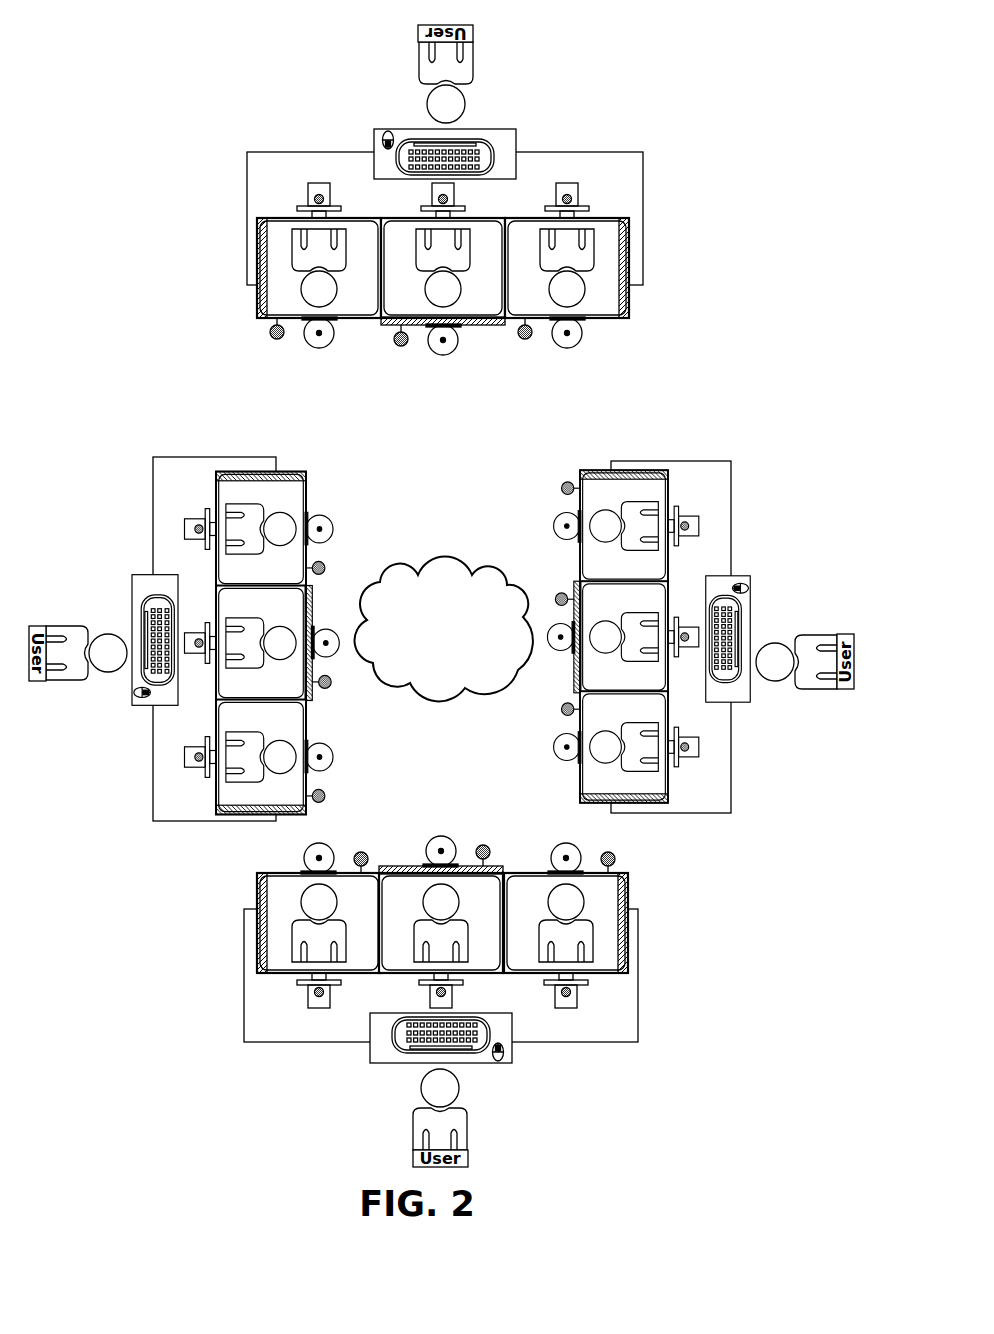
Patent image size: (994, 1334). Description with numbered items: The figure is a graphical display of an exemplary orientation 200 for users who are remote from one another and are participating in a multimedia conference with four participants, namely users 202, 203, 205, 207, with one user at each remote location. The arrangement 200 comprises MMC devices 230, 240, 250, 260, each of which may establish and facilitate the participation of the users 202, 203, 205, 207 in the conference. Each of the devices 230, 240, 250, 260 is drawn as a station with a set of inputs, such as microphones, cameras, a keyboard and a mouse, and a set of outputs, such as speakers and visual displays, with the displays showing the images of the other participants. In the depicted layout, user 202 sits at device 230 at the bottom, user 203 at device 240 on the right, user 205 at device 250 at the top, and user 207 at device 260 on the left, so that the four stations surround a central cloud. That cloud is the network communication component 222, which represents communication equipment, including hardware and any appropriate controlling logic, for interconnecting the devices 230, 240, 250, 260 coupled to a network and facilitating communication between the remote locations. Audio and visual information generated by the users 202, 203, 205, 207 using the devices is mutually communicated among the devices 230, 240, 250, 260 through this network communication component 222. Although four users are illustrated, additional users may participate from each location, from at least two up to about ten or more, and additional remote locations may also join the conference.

The orientation 200 is at (146, 59).
The user 205 is at (475, 70).
The MMC device 250 is at (697, 200).
The MMC device 260 is at (193, 424).
The MMC device 240 is at (641, 423).
The network communication component 222 is at (445, 557).
The user 207 is at (79, 623).
The user 203 is at (798, 633).
The MMC device 230 is at (691, 927).
The user 202 is at (473, 1128).